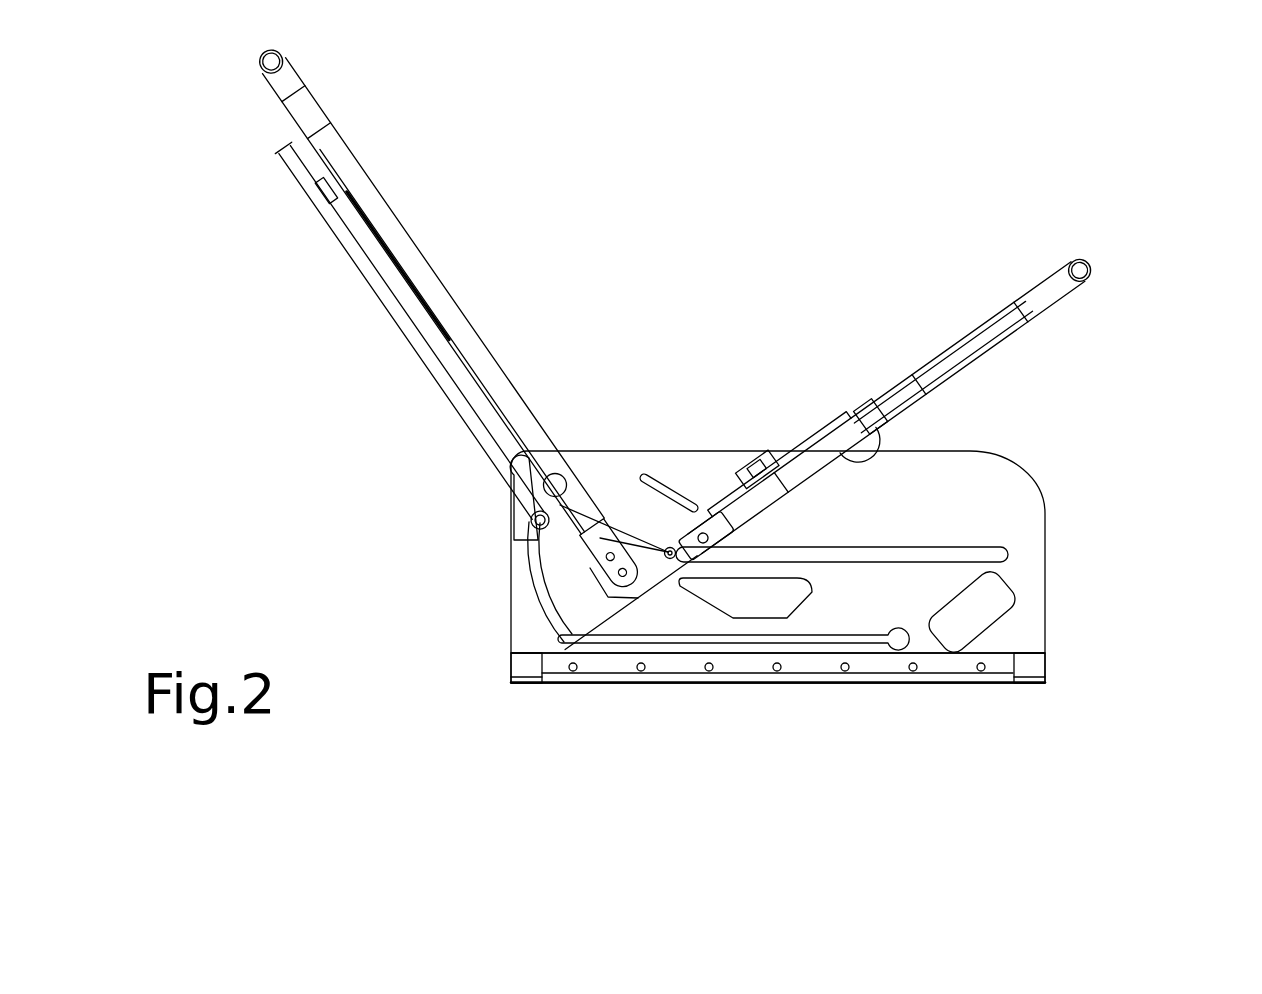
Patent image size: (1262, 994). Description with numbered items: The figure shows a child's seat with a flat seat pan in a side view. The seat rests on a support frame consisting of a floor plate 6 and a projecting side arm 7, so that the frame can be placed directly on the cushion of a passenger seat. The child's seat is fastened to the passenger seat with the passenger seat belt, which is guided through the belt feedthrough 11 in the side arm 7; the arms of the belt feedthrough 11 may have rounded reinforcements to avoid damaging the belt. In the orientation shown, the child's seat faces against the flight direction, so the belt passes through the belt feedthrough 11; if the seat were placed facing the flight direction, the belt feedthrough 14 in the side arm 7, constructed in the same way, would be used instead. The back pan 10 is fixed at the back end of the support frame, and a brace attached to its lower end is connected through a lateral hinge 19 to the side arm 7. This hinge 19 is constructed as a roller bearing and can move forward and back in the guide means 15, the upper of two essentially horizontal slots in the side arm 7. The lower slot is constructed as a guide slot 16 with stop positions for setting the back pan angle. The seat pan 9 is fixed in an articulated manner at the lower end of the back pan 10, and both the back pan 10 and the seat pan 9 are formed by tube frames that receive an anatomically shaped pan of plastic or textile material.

The floor plate 6 is at (595, 668).
The side arm 7 is at (910, 488).
The seat pan 9 is at (936, 373).
The back pan 10 is at (398, 253).
The belt feedthrough 11 is at (1000, 612).
The belt feedthrough 14 is at (763, 598).
The guide means 15 is at (953, 553).
The guide slot 16 is at (685, 641).
The hinge 19 is at (667, 548).